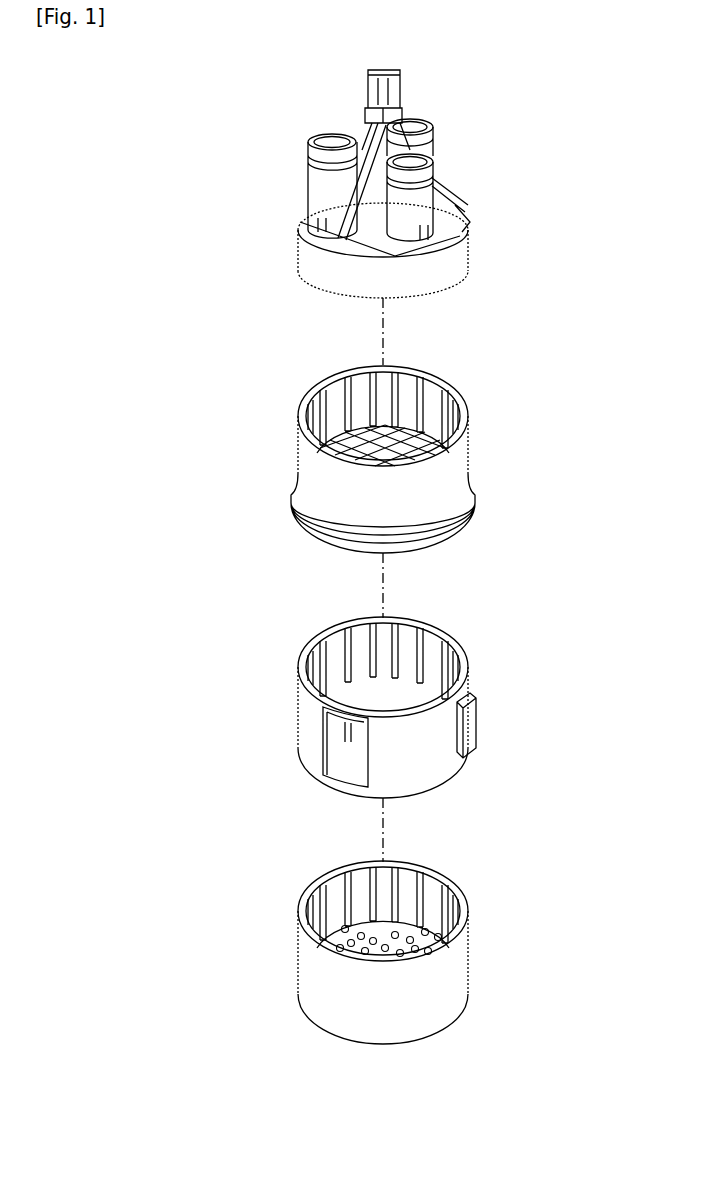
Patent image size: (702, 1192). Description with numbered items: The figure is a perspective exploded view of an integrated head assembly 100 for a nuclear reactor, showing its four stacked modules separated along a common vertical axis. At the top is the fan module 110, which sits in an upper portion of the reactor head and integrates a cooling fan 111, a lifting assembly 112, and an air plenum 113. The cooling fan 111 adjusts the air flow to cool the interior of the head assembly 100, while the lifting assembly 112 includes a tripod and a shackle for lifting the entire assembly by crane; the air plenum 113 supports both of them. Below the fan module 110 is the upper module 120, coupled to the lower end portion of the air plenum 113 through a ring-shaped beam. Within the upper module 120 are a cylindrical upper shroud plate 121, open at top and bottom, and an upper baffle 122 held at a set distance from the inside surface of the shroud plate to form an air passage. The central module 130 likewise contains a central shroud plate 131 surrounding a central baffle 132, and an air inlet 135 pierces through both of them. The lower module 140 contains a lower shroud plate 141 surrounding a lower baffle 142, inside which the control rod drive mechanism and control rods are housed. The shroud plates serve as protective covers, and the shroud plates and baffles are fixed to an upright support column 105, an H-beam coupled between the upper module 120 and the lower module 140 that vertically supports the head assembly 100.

The integrated head assembly 100 is at (133, 249).
The support column 105 is at (300, 427).
The fan module 110 is at (528, 143).
The cooling fan 111 is at (318, 180).
The lifting assembly 112 is at (368, 92).
The air plenum 113 is at (305, 252).
The upper module 120 is at (528, 375).
The upper shroud plate 121 is at (300, 405).
The upper baffle 122 is at (408, 467).
The central module 130 is at (528, 630).
The central shroud plate 131 is at (300, 665).
The central baffle 132 is at (333, 643).
The air inlet 135 is at (470, 725).
The lower module 140 is at (528, 886).
The lower shroud plate 141 is at (300, 905).
The lower baffle 142 is at (335, 880).